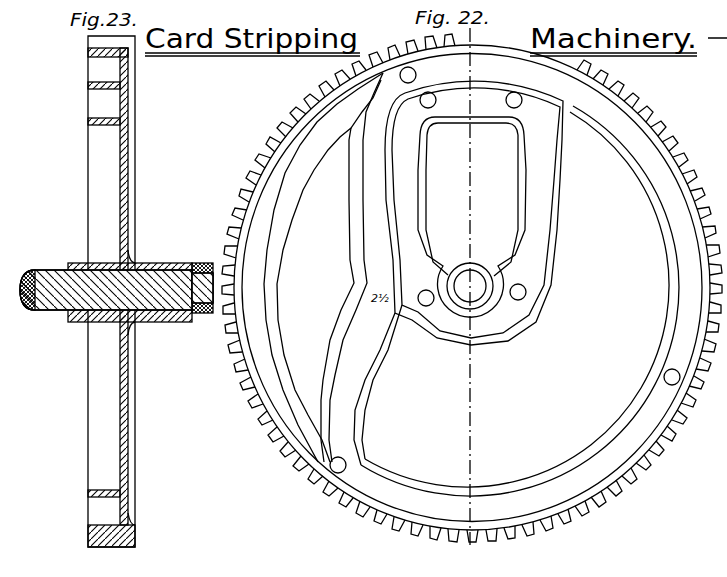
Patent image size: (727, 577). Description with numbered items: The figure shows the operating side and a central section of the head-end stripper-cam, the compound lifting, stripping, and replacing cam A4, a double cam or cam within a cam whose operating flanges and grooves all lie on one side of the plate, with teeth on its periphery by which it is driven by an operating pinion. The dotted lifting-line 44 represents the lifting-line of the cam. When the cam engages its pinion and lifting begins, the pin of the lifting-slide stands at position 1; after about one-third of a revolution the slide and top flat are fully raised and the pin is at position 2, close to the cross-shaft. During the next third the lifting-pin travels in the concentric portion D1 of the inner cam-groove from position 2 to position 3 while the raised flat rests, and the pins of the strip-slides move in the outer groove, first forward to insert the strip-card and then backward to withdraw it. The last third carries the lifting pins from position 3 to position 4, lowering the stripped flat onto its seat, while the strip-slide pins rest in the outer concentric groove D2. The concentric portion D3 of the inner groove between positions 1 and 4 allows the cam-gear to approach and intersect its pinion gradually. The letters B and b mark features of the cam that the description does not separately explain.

In FIG. 22, the compound lifting, stripping, and replacing cam A4 is at (567, 278).
In FIG. 23, the compound lifting, stripping, and replacing cam A4 is at (116, 291).
In FIG. 22, the curved arm B is at (323, 267).
In FIG. 22, the arm branch b is at (352, 267).
In FIG. 22, the concentric portion of the inner cam-groove D1 is at (458, 273).
In FIG. 22, the outer concentric groove D2 is at (520, 301).
In FIG. 22, the concentric portion of the inner cam-groove D3 is at (472, 204).
In FIG. 22, the lifting-line of the cam 44 is at (469, 286).
In FIG. 22, the pin position 1 is at (550, 238).
In FIG. 22, the pin position 2 is at (382, 381).
In FIG. 22, the pin position 3 is at (463, 183).
In FIG. 22, the pin position 4 is at (514, 100).